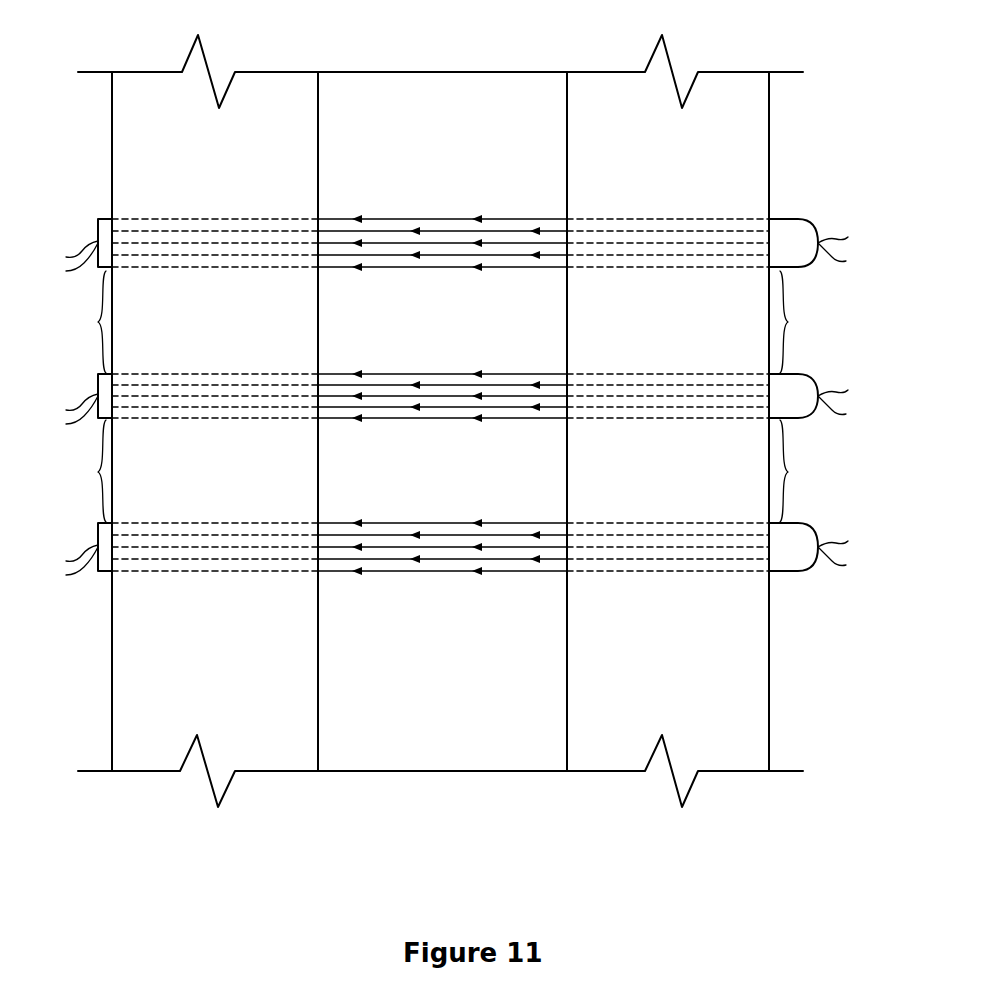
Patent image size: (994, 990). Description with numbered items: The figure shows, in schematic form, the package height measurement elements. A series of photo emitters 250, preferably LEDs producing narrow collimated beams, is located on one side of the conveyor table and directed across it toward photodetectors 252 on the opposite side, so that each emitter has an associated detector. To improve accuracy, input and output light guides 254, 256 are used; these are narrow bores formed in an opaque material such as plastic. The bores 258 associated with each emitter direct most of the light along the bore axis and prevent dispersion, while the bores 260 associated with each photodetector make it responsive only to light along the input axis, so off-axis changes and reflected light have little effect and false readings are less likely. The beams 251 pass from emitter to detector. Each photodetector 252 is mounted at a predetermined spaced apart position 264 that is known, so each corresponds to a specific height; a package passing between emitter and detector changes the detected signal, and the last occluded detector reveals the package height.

The photo emitter 250 is at (800, 232).
The flow arrows / conveyance direction 251 is at (443, 367).
The photodetector 252 is at (98, 226).
The input light guide 254 is at (305, 170).
The output light guide 256 is at (580, 174).
The bores associated with the emitter 258 is at (663, 267).
The bores associated with the photodetector 260 is at (228, 267).
The predetermined spaced apart position 264 is at (441, 396).